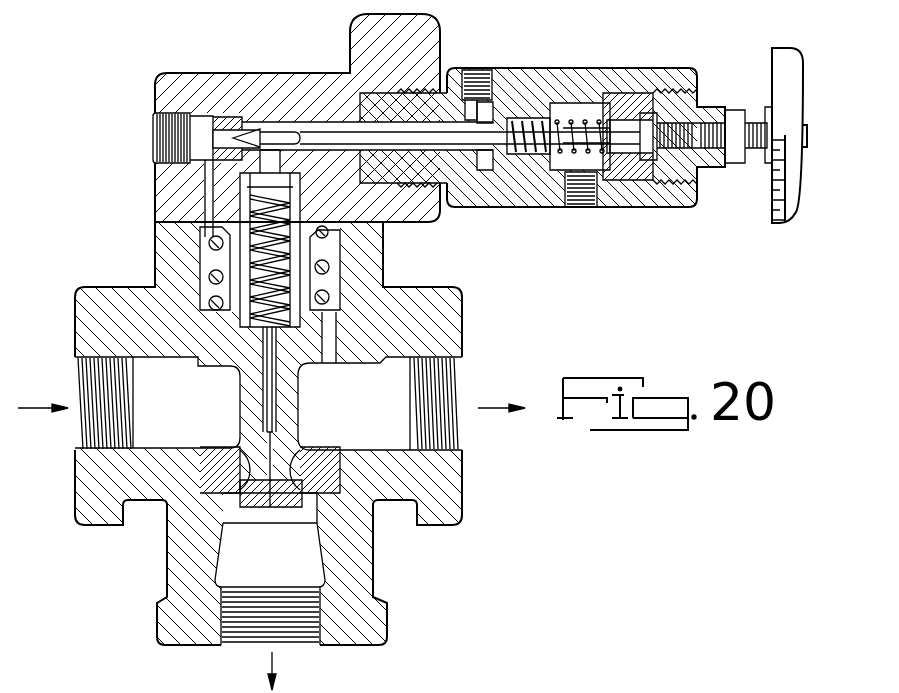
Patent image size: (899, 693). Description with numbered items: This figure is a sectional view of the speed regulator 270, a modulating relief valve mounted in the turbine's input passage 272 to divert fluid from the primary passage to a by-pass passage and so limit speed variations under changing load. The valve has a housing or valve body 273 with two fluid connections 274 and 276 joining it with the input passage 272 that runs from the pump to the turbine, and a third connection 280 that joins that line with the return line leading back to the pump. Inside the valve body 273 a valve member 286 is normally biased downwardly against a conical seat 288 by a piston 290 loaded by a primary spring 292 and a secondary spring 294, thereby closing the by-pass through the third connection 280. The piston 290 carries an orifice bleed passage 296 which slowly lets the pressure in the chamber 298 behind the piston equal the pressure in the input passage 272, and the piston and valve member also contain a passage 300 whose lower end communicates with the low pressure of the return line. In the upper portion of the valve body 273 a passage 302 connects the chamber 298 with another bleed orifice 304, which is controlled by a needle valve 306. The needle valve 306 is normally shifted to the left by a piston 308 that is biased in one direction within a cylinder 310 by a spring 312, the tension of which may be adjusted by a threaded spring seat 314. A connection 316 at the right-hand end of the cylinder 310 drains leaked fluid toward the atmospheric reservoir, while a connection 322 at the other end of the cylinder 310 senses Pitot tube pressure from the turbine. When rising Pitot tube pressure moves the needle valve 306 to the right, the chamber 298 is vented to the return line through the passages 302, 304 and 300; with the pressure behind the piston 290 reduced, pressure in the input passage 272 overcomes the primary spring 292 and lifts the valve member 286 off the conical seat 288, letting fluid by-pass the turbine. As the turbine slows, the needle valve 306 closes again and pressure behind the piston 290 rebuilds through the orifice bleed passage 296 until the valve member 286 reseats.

The speed regulator 270 is at (522, 308).
The input passage 272 is at (404, 418).
The valve body 273 is at (370, 276).
The fluid connection 274 is at (88, 373).
The fluid connection 276 is at (458, 378).
The third connection 280 is at (308, 640).
The valve member 286 is at (296, 437).
The conical seat 288 is at (235, 447).
The piston 290 is at (222, 352).
The primary spring 292 is at (210, 277).
The secondary spring 294 is at (296, 196).
The orifice bleed passage 296 is at (331, 363).
The chamber 298 is at (337, 283).
The passage 300 is at (272, 505).
The passage 302 is at (207, 190).
The bleed orifice 304 is at (229, 133).
The needle valve 306 is at (258, 133).
The piston 308 is at (530, 110).
The cylinder 310 is at (563, 110).
The spring 312 is at (600, 93).
The threaded spring seat 314 is at (773, 83).
The connection 316 is at (576, 203).
The connection 322 is at (468, 73).